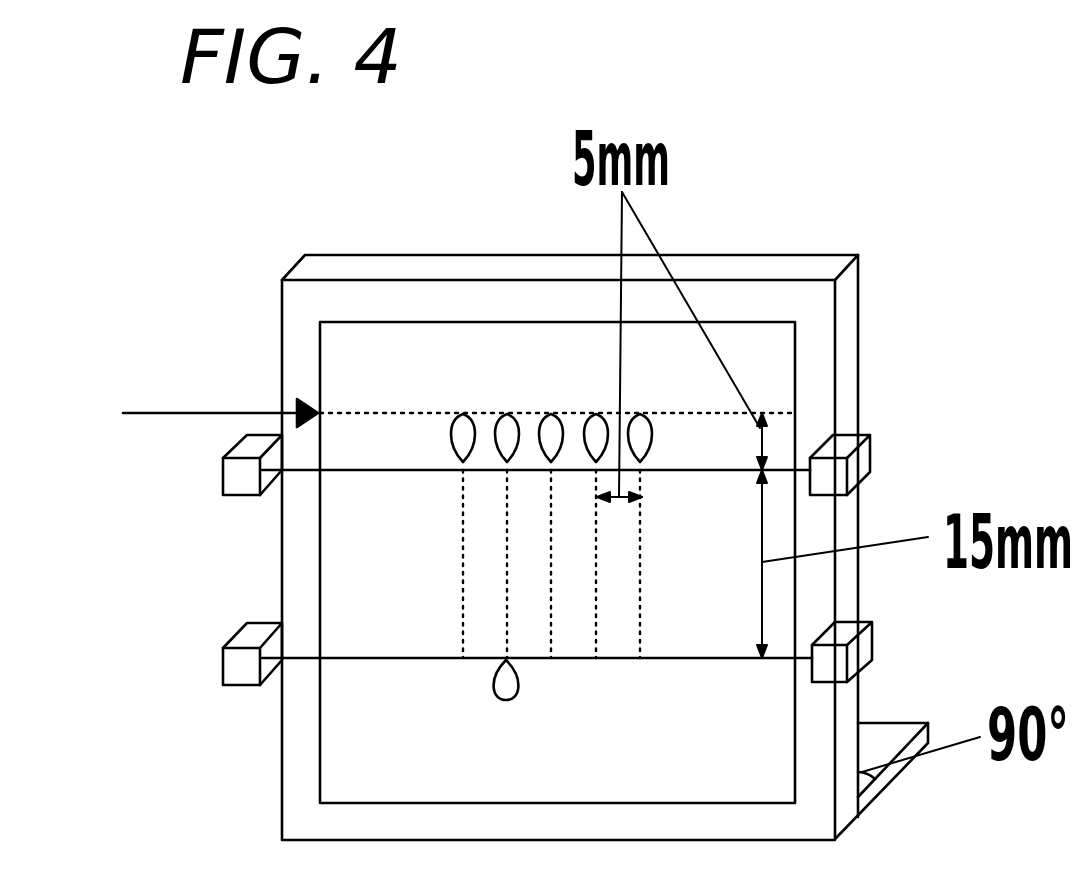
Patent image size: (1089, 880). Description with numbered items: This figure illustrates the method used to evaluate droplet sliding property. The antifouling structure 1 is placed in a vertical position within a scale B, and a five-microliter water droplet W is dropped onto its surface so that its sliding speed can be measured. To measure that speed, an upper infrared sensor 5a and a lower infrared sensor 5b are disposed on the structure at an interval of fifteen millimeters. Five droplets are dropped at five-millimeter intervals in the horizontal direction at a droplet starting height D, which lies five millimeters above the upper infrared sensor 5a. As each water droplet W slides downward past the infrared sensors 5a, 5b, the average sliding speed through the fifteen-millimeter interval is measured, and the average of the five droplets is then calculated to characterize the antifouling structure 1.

The antifouling structure 1 is at (367, 757).
The infrared sensor 5a is at (233, 477).
The infrared sensor 5b is at (242, 668).
The scale B is at (822, 345).
The water droplet W is at (463, 433).
The droplet starting height D is at (432, 416).